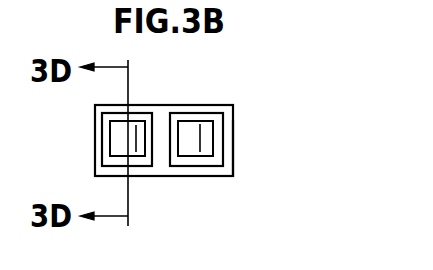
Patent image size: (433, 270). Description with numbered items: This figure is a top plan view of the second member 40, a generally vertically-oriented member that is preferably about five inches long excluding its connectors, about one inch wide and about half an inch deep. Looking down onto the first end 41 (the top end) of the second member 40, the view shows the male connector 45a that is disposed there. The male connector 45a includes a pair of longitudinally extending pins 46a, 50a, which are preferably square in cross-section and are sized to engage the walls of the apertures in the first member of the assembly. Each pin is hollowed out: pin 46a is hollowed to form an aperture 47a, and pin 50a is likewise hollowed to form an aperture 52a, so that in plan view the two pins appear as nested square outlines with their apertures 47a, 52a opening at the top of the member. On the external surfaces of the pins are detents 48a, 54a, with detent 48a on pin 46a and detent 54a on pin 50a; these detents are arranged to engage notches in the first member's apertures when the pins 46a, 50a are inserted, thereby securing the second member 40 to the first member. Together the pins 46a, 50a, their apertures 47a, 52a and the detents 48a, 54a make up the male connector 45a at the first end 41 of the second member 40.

The second member 40 is at (240, 101).
The first end 41 is at (229, 172).
The male connector 45a is at (163, 177).
The pin 46a is at (96, 108).
The aperture 47a is at (123, 148).
The detent 48a is at (96, 143).
The pin 50a is at (234, 108).
The aperture 52a is at (207, 152).
The detent 54a is at (192, 107).